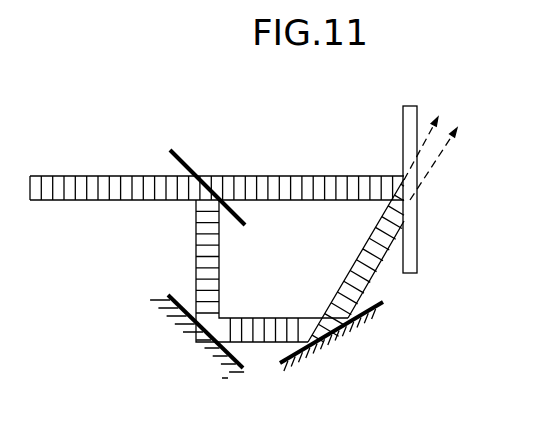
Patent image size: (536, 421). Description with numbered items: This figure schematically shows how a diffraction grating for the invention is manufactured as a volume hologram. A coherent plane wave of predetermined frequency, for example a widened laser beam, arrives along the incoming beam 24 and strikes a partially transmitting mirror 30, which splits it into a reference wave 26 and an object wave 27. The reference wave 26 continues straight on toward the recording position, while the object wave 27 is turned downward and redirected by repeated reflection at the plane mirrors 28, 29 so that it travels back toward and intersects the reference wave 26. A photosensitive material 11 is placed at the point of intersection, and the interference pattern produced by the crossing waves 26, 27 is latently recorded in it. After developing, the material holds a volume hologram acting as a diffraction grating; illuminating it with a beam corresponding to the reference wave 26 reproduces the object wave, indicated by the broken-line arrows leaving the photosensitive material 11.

The photosensitive material 11 is at (417, 250).
The light guide 24 is at (93, 190).
The reference wave 26 is at (296, 187).
The object wave 27 is at (203, 252).
The plane mirror 28 is at (225, 358).
The plane mirror 29 is at (305, 350).
The semi-transparent mirror 30 is at (177, 150).